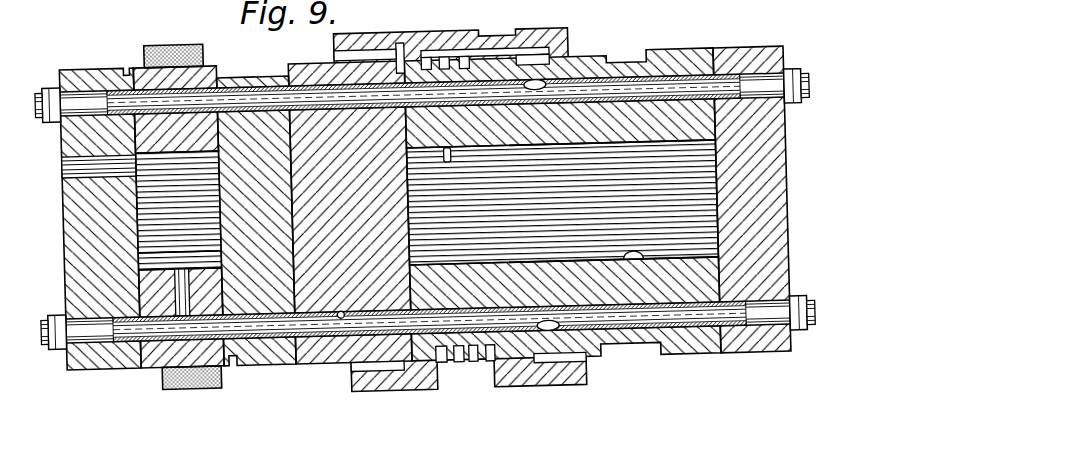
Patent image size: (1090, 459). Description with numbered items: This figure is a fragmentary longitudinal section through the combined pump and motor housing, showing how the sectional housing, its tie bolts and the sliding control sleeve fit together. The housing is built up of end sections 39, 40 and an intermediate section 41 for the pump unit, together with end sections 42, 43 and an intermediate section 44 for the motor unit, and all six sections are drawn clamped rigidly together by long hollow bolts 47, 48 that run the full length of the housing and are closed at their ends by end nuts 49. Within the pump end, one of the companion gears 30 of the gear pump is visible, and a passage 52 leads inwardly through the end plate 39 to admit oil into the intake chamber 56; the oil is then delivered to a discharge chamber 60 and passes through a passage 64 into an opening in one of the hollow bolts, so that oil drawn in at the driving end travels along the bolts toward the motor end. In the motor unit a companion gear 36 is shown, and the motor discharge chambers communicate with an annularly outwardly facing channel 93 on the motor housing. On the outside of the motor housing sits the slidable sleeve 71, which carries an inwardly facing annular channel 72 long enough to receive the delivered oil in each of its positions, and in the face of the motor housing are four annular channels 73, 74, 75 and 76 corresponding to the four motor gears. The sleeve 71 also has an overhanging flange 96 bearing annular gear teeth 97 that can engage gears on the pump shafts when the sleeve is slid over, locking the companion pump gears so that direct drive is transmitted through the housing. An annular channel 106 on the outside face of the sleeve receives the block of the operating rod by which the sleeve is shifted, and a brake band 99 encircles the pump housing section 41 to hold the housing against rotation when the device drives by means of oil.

The companion gear 30 is at (138, 231).
The companion gear 36 is at (690, 183).
The end section 39 is at (98, 372).
The end section 40 is at (268, 360).
The intermediate section 41 is at (157, 355).
The end section 42 is at (312, 358).
The end section 43 is at (765, 335).
The intermediate section 44 is at (600, 353).
The hollow bolt 47 is at (325, 332).
The hollow bolt 48 is at (255, 88).
The end nut 49 is at (52, 85).
The passage 52 is at (70, 172).
The chamber 56 is at (158, 150).
The chamber 60 is at (145, 265).
The passage 64 is at (175, 290).
The slidable sleeve 71 is at (573, 28).
The annular channel 72 is at (550, 360).
The annular channel 73 is at (485, 365).
The annular channel 74 is at (470, 365).
The annular channel 75 is at (452, 360).
The annular channel 76 is at (430, 363).
The annularly outwardly facing channel 93 is at (633, 56).
The overhanging flange 96 is at (338, 330).
The annular gear teeth 97 is at (340, 52).
The brake band 99 is at (190, 385).
The annular channel 106 is at (507, 20).